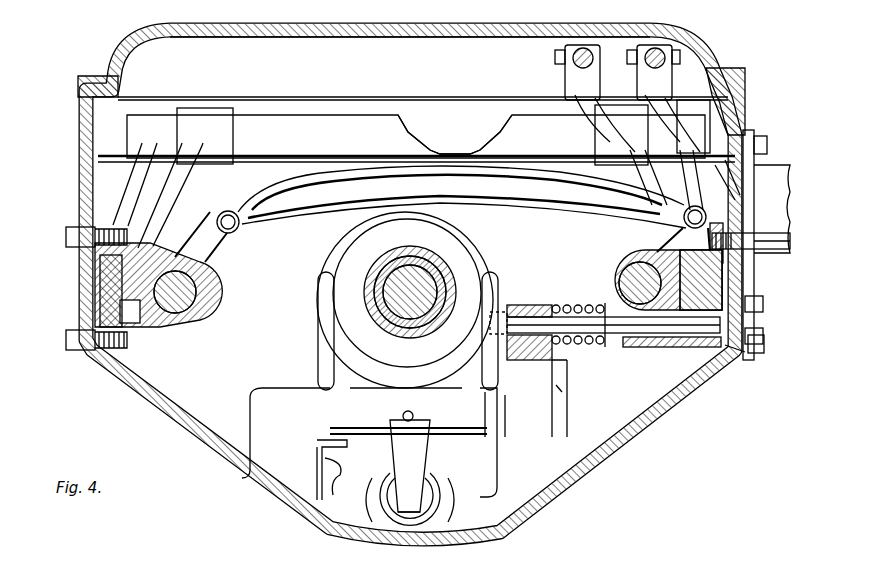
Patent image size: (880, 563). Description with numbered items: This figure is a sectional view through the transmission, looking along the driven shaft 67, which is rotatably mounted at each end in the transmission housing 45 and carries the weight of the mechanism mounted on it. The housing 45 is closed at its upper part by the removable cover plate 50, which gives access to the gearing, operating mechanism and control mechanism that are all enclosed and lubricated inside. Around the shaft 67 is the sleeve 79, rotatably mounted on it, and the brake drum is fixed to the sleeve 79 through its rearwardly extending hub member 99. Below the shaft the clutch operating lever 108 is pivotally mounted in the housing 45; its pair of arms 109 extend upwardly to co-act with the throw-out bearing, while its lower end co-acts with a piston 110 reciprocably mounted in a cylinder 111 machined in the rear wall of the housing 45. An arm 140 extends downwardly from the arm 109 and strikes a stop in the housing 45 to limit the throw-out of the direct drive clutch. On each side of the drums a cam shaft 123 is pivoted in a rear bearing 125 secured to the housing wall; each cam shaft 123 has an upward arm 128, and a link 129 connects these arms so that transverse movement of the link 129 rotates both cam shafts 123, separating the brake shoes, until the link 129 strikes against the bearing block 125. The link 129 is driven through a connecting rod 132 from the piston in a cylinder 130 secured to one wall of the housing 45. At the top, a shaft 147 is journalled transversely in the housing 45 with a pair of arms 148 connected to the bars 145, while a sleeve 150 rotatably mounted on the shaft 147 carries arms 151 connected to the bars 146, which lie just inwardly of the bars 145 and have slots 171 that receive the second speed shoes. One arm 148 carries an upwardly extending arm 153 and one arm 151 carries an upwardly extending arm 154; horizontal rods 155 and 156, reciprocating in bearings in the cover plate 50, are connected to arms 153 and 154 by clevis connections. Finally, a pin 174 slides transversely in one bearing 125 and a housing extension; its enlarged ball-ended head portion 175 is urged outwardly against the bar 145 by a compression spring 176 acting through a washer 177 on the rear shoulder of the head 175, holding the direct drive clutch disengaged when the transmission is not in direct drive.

The transmission housing 45 is at (120, 392).
The removable cover plate 50 is at (142, 44).
The driven shaft 67 is at (400, 290).
The sleeve 79 is at (440, 270).
The hub member 99 is at (455, 285).
The clutch operating lever 108 is at (410, 457).
The arms 109 is at (494, 296).
The piston 110 is at (409, 523).
The cylinder 111 is at (438, 495).
The cam shafts 123 is at (197, 301).
The rear bearings 125 is at (135, 312).
The arm 128 is at (449, 234).
The link 129 is at (462, 197).
The cylinder 130 is at (780, 250).
The connecting rod 132 is at (748, 142).
The arm 140 is at (340, 470).
The bar 145 is at (110, 292).
The bar 146 is at (120, 308).
The shaft 147 is at (455, 134).
The arms 148 is at (736, 125).
The sleeve 150 is at (418, 132).
The arms 151 is at (170, 192).
The upwardly extending arm 153 is at (675, 102).
The upwardly extending arm 154 is at (582, 100).
The rod 155 is at (660, 58).
The rod 156 is at (578, 55).
The slots 171 is at (150, 325).
The pin 174 is at (578, 345).
The head portion 175 is at (677, 343).
The compression spring 176 is at (572, 378).
The washer 177 is at (612, 348).